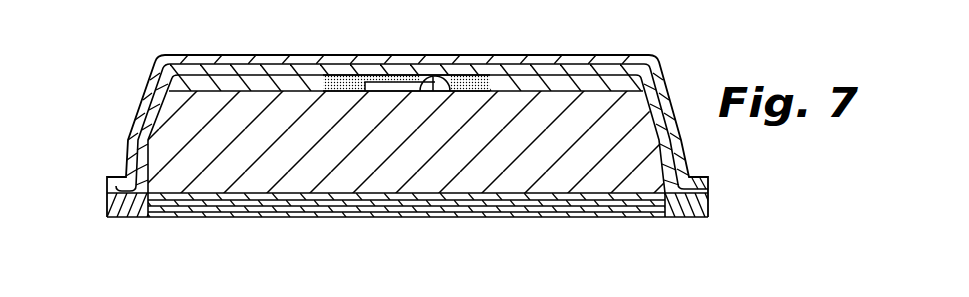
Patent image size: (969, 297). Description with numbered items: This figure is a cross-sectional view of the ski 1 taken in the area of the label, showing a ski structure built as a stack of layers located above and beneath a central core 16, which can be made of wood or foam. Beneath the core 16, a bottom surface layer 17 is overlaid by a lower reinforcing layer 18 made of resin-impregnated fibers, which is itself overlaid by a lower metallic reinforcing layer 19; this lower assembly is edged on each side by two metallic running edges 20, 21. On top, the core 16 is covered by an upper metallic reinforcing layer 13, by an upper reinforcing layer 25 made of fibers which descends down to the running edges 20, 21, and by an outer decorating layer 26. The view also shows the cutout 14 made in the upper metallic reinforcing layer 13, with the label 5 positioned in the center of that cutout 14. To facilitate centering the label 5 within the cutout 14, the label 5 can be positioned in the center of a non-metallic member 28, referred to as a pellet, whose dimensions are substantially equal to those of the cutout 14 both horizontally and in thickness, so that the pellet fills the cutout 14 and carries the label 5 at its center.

The ski 1 is at (98, 114).
The label 5 is at (432, 76).
The upper metallic reinforcing layer 13 is at (665, 71).
The cutout 14 is at (336, 66).
The central core 16 is at (410, 162).
The bottom surface layer 17 is at (253, 217).
The lower reinforcing layer 18 is at (507, 207).
The lower metallic reinforcing layer 19 is at (593, 207).
The metallic running edge 20 is at (107, 217).
The metallic running edge 21 is at (703, 218).
The upper reinforcing layer 25 is at (598, 75).
The decorating layer 26 is at (484, 66).
The non-metallic member 28 is at (362, 80).